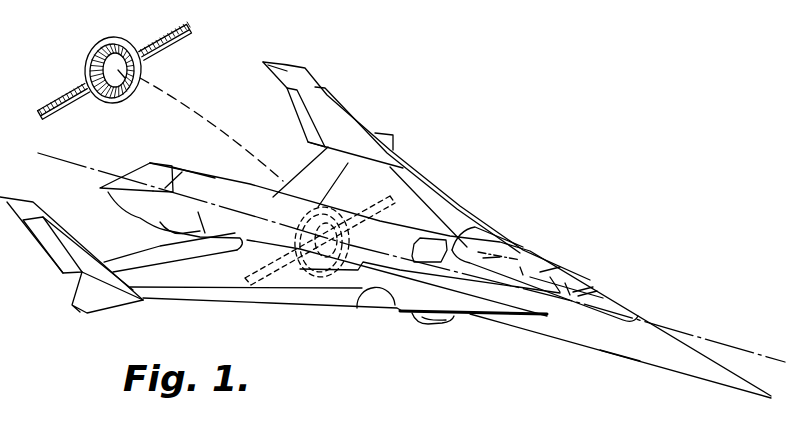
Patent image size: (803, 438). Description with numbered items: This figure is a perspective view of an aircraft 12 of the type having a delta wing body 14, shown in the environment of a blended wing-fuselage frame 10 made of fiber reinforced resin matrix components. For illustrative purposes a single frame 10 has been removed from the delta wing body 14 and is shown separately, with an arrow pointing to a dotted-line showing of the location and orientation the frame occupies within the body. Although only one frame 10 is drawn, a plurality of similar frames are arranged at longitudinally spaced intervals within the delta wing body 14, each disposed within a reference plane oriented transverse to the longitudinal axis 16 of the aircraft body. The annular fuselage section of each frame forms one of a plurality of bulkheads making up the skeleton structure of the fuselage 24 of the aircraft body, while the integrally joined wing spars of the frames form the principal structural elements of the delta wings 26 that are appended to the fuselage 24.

The blended wing-fuselage frame 10 is at (80, 72).
The aircraft 12 is at (538, 228).
The delta wing body 14 is at (458, 203).
The longitudinal axis 16 is at (703, 337).
The fuselage 24 is at (401, 248).
The delta wings 26 is at (195, 281).